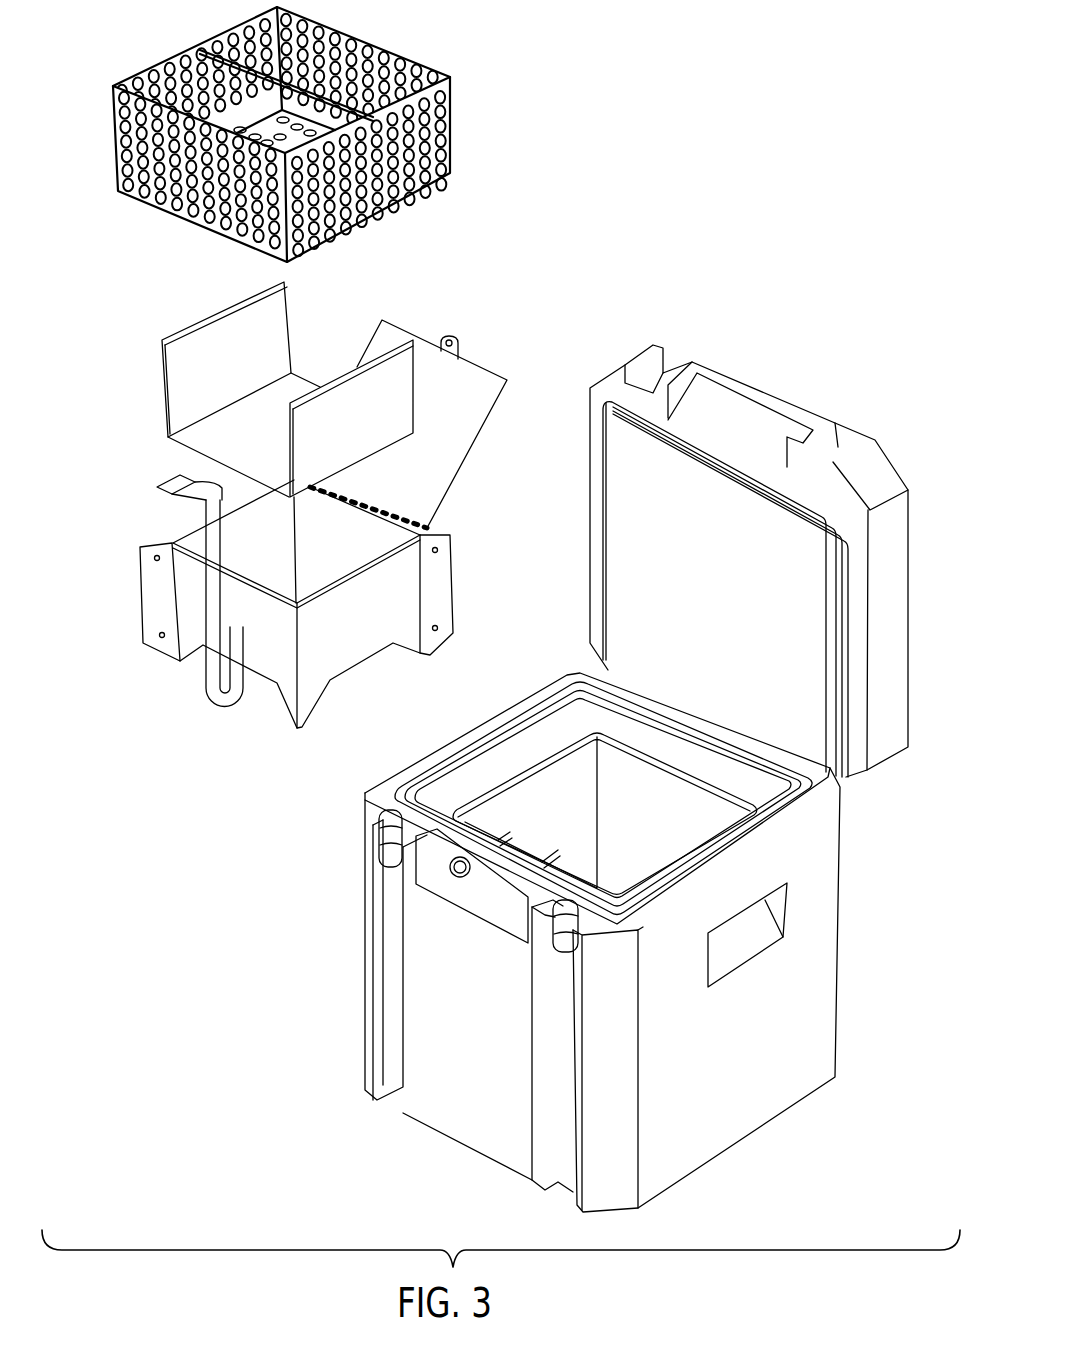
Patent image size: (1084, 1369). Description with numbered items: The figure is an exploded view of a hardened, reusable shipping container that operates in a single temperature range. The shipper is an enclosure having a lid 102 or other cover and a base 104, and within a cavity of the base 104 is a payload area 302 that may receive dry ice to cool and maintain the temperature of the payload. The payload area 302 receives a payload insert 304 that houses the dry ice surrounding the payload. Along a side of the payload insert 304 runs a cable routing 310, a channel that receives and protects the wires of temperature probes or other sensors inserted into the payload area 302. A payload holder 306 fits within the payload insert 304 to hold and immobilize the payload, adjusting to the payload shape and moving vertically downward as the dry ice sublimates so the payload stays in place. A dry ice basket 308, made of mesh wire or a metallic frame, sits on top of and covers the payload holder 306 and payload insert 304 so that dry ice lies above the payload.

The lid 102 is at (900, 473).
The base 104 is at (838, 1060).
The payload area 302 is at (730, 822).
The payload insert 304 is at (293, 683).
The payload holder 306 is at (163, 373).
The dry ice basket 308 is at (123, 150).
The cable routing 310 is at (207, 650).